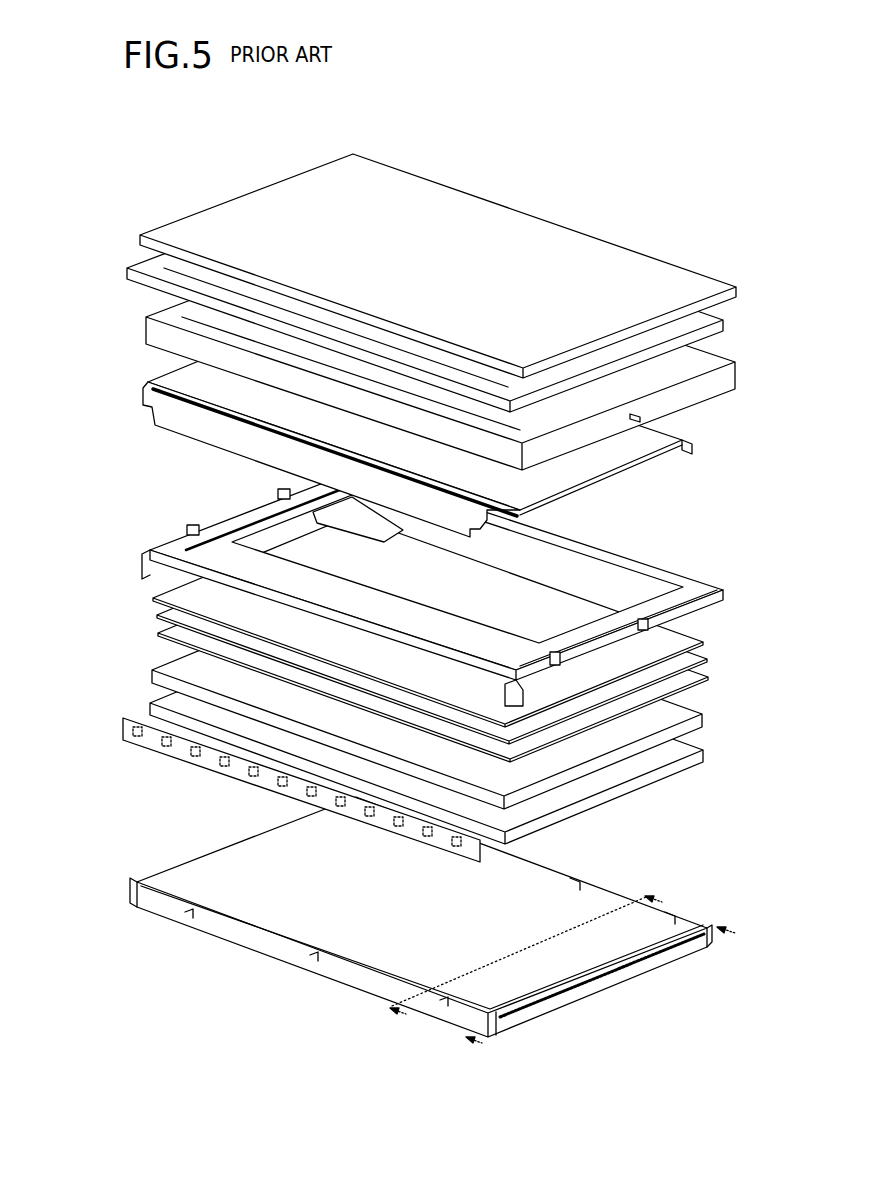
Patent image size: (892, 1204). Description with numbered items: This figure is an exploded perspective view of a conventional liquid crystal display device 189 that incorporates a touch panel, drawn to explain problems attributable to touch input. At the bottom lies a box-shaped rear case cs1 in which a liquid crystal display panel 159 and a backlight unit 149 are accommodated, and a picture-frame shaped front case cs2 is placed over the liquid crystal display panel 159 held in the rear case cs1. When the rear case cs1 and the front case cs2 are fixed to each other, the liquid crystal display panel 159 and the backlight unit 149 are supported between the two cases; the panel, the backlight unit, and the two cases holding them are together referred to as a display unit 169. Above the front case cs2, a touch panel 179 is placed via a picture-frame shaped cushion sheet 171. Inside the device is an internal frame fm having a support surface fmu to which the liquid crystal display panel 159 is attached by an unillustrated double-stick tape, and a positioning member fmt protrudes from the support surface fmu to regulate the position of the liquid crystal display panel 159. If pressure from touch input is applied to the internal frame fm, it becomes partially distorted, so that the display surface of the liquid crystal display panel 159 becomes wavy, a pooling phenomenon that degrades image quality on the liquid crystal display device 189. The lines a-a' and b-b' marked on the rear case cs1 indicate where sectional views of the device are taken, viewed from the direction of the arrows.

The liquid crystal display device 189 is at (448, 574).
The touch panel 179 is at (197, 226).
The cushion sheet 171 is at (140, 262).
The front case cs2 is at (162, 326).
The display unit 169 is at (450, 688).
The liquid crystal display panel 159 is at (417, 580).
The internal frame fm is at (417, 582).
The support surface fmu is at (254, 513).
The positioning member fmt is at (195, 526).
The backlight unit 149 is at (735, 758).
The rear case cs1 is at (424, 929).
The section line a-a' a is at (464, 1049).
The section line a- a' is at (726, 917).
The section line b-b' b is at (388, 1021).
The section line b- b' is at (653, 887).